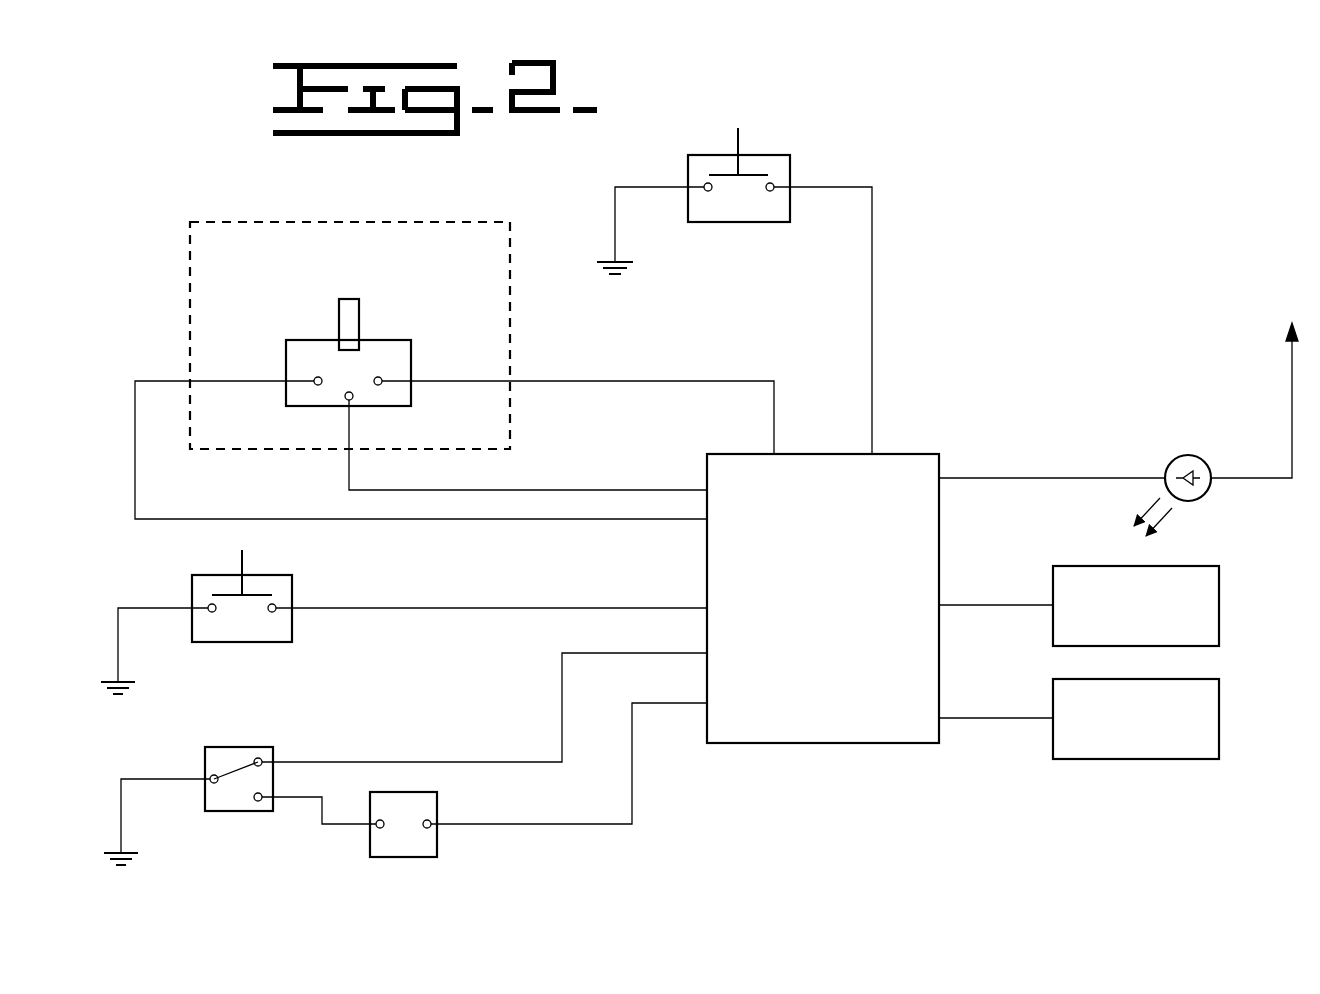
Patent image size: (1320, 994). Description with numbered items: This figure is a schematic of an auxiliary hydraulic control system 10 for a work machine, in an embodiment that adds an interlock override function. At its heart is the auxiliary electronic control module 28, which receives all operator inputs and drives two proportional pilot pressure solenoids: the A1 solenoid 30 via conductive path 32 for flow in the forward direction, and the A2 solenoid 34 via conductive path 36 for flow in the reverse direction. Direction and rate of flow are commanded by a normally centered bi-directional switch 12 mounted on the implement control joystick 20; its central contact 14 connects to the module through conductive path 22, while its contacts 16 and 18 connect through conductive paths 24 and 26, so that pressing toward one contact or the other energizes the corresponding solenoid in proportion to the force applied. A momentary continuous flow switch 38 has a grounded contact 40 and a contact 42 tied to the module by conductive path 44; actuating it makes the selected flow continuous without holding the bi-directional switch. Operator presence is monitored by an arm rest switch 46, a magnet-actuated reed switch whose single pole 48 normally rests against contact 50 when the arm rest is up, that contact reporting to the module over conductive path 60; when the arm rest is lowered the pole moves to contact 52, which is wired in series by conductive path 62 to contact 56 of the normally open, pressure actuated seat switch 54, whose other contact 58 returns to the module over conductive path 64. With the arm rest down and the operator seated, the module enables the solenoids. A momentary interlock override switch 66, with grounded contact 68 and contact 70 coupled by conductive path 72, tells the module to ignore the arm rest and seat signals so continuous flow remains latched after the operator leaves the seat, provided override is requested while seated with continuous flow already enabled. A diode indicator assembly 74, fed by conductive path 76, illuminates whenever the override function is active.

The auxiliary hydraulic control system 10 is at (1023, 185).
The bi-directional switch 12 is at (275, 357).
The contact 14 is at (347, 400).
The contact 16 is at (315, 378).
The contact 18 is at (382, 380).
The implement control joystick 20 is at (217, 222).
The conductive path 22 is at (558, 490).
The conductive path 24 is at (135, 432).
The conductive path 26 is at (620, 381).
The auxiliary electronic control module 28 is at (903, 470).
The A1 solenoid 30 is at (1219, 577).
The conductive path 32 is at (988, 605).
The A2 solenoid 34 is at (1219, 703).
The conductive path 36 is at (988, 718).
The continuous flow switch 38 is at (767, 125).
The contact 40 is at (704, 189).
The contact 42 is at (774, 186).
The conductive path 44 is at (872, 333).
The arm rest switch 46 is at (187, 760).
The pole 48 is at (210, 783).
The contact 50 is at (262, 759).
The contact 52 is at (255, 802).
The seat switch 54 is at (442, 845).
The contact 56 is at (382, 830).
The contact 58 is at (431, 823).
The conductive path 60 is at (373, 762).
The conductive path 62 is at (318, 815).
The conductive path 64 is at (577, 824).
The interlock override switch 66 is at (170, 572).
The contact 68 is at (208, 610).
The contact 70 is at (276, 607).
The conductive path 72 is at (467, 608).
The diode indicator assembly 74 is at (1192, 455).
The conductive path 76 is at (1057, 478).